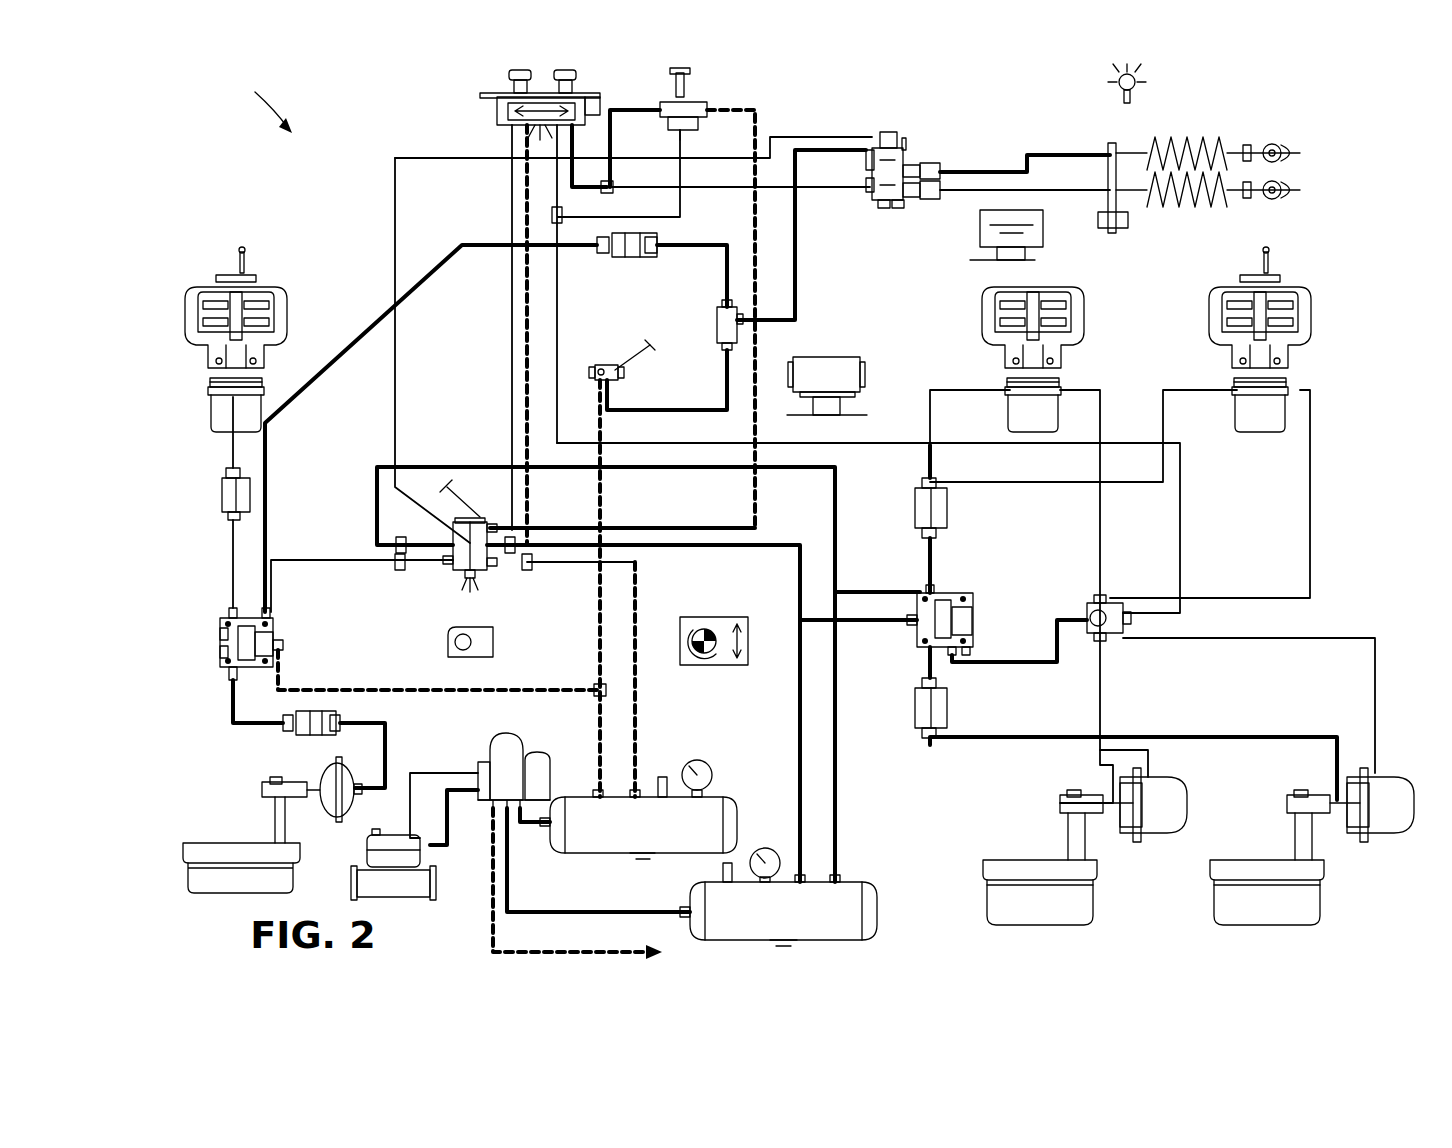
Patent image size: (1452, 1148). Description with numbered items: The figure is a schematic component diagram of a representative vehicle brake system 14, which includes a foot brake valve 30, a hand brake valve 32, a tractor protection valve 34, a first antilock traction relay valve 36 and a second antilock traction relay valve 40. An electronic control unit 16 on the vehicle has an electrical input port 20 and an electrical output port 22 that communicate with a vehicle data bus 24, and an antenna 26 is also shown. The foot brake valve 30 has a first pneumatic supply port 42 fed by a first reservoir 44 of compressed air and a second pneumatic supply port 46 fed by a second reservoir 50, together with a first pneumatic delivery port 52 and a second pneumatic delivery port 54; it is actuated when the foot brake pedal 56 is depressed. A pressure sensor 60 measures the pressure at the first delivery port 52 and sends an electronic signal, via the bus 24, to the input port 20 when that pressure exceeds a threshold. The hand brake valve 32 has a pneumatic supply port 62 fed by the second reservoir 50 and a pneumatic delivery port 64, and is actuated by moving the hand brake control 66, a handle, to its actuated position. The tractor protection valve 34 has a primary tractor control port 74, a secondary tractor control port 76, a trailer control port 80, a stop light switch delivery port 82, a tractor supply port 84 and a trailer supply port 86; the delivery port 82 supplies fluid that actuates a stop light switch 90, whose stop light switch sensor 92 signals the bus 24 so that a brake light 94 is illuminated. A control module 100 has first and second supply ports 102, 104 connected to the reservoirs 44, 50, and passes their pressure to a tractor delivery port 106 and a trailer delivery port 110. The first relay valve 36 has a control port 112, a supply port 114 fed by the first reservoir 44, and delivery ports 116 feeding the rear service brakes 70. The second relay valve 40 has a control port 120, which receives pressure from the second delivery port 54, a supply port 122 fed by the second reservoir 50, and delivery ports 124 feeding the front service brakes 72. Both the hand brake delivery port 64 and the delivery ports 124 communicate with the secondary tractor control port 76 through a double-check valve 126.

The brake system 14 is at (261, 97).
The electronic control unit 16 is at (865, 372).
The electrical input port 20 is at (855, 395).
The electrical output port 22 is at (808, 397).
The vehicle data bus 24 is at (1040, 262).
The antenna 26 is at (1043, 228).
The foot brake valve 30 is at (462, 512).
The hand brake valve 32 is at (600, 365).
The tractor protection valve 34 is at (898, 135).
The first antilock traction relay valve 36 is at (973, 620).
The second antilock traction relay valve 40 is at (220, 642).
The first pneumatic supply port 42 is at (500, 528).
The first source of compressed air 44 is at (870, 882).
The second pneumatic supply port 46 is at (492, 570).
The second source of compressed air 50 is at (733, 797).
The first pneumatic delivery port 52 is at (395, 516).
The second pneumatic delivery port 54 is at (455, 572).
The foot brake pedal 56 is at (476, 495).
The pressure sensor 60 is at (394, 545).
The pneumatic supply port 62 is at (592, 378).
The pneumatic delivery port 64 is at (624, 378).
The hand brake control 66 is at (648, 348).
The rear service brakes 70 is at (1237, 385).
The front service brakes 72 is at (215, 392).
The primary tractor pneumatic control port 74 is at (880, 132).
The secondary tractor pneumatic control port 76 is at (872, 140).
The trailer pneumatic control port 80 is at (910, 165).
The stop light switch pneumatic delivery port 82 is at (884, 208).
The tractor pneumatic supply port 84 is at (898, 208).
The trailer pneumatic supply port 86 is at (932, 198).
The stop light switch 90 is at (866, 160).
The stop light switch sensor 92 is at (868, 192).
The brake light 94 is at (1130, 103).
The control module 100 is at (506, 88).
The first supply port 102 is at (488, 122).
The second supply port 104 is at (535, 85).
The tractor delivery port 106 is at (568, 98).
The trailer delivery port 110 is at (592, 118).
The pneumatic control port 112 is at (922, 593).
The pneumatic supply port 114 is at (915, 625).
The pneumatic delivery port 116 is at (935, 592).
The pneumatic control port 120 is at (272, 612).
The pneumatic supply port 122 is at (283, 646).
The pneumatic delivery port 124 is at (231, 610).
The double-check valve 126 is at (717, 310).